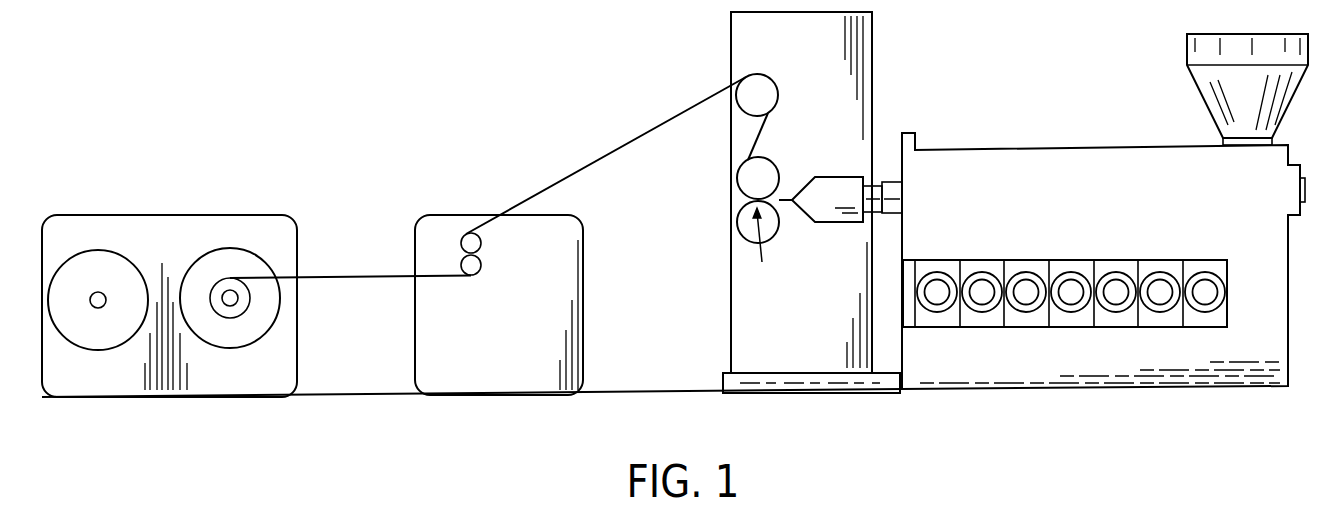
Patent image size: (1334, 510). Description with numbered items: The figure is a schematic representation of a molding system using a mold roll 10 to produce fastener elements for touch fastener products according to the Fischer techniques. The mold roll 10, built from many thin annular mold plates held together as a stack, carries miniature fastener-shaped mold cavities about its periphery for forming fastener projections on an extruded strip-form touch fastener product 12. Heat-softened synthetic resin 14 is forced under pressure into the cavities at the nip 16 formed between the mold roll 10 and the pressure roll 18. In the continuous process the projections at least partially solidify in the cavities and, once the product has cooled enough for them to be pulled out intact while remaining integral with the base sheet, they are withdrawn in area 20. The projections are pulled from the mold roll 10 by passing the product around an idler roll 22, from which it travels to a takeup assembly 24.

The mold roll 10 is at (737, 178).
The strip-form touch fastener product 12 is at (655, 127).
The heat-softened synthetic resin 14 is at (788, 198).
The nip 16 is at (769, 248).
The pressure roll 18 is at (737, 222).
The area 20 is at (747, 157).
The idler roll 22 is at (766, 76).
The takeup assembly 24 is at (155, 215).